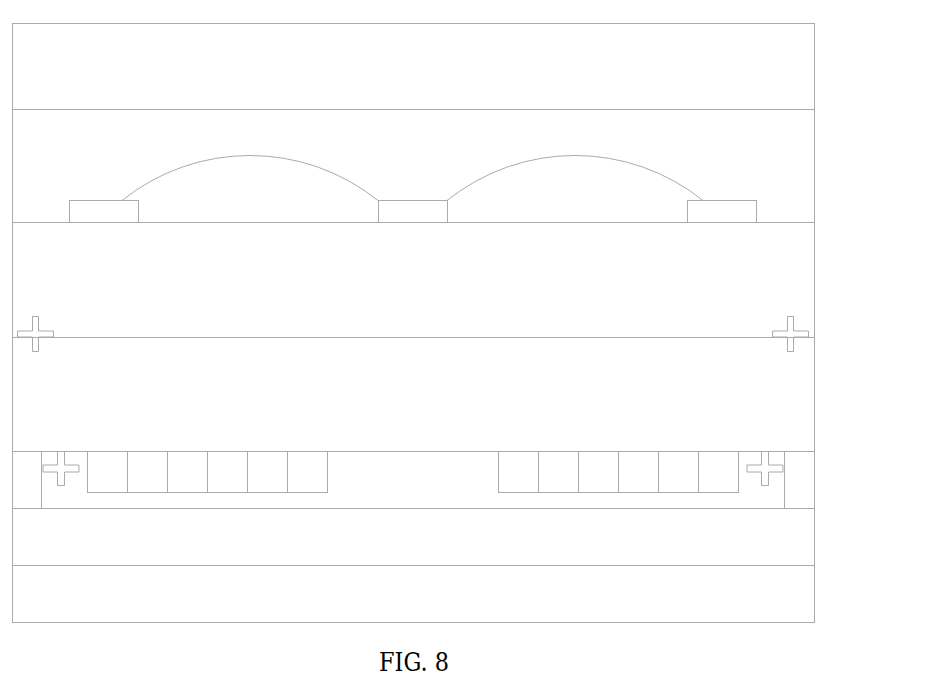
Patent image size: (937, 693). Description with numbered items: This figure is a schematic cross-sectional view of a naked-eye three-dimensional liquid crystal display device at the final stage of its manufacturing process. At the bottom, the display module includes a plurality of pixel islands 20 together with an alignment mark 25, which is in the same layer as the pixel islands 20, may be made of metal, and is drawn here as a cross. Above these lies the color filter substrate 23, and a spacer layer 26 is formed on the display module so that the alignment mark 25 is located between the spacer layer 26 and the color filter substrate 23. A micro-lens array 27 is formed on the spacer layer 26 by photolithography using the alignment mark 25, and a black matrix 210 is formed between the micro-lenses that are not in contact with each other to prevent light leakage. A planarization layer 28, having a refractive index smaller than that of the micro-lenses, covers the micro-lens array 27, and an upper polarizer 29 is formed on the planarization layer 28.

The pixel islands 20 is at (722, 465).
The color filter substrate 23 is at (788, 388).
The alignment mark 25 is at (795, 333).
The spacer layer 26 is at (742, 275).
The micro-lens array 27 is at (678, 181).
The planarization layer 28 is at (755, 141).
The upper polarizer 29 is at (755, 73).
The black matrix 210 is at (742, 209).